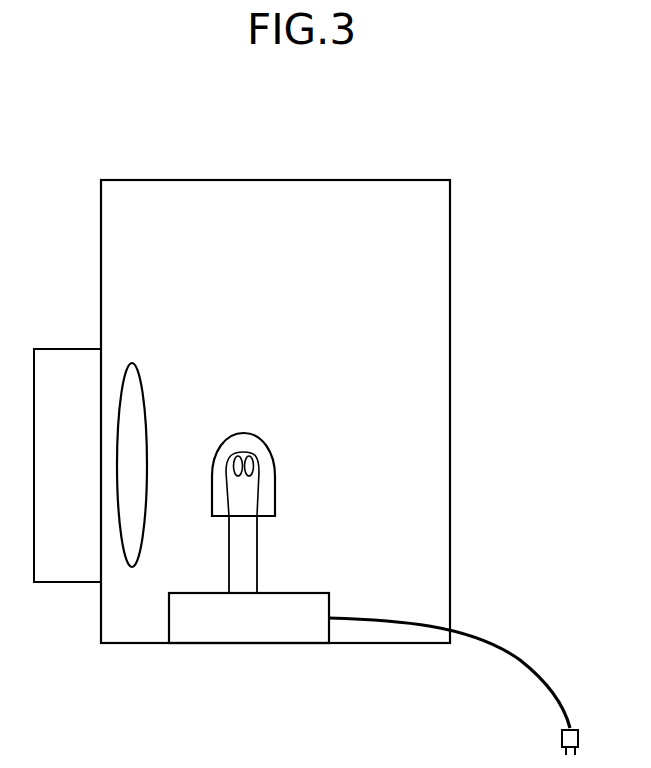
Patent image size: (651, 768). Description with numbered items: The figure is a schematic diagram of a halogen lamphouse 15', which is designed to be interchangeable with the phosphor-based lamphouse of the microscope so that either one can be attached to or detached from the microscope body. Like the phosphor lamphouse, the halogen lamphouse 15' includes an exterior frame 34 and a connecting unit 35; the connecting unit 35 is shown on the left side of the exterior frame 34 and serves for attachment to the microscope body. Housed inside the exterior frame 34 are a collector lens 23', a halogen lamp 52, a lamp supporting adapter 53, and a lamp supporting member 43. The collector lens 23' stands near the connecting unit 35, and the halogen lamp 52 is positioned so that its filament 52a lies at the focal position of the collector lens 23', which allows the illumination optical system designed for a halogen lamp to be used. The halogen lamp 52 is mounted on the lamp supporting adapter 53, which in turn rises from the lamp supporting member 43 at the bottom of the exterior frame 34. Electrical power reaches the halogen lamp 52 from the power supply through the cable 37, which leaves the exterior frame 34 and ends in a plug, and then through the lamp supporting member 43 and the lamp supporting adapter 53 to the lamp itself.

The halogen lamphouse 15' is at (306, 416).
The exterior frame 34 is at (271, 180).
The connecting unit 35 is at (68, 349).
The collector lens 23' is at (138, 439).
The halogen lamp 52 is at (262, 436).
The filament 52a is at (233, 455).
The lamp supporting adapter 53 is at (259, 530).
The lamp supporting member 43 is at (320, 593).
The cable 37 is at (518, 650).